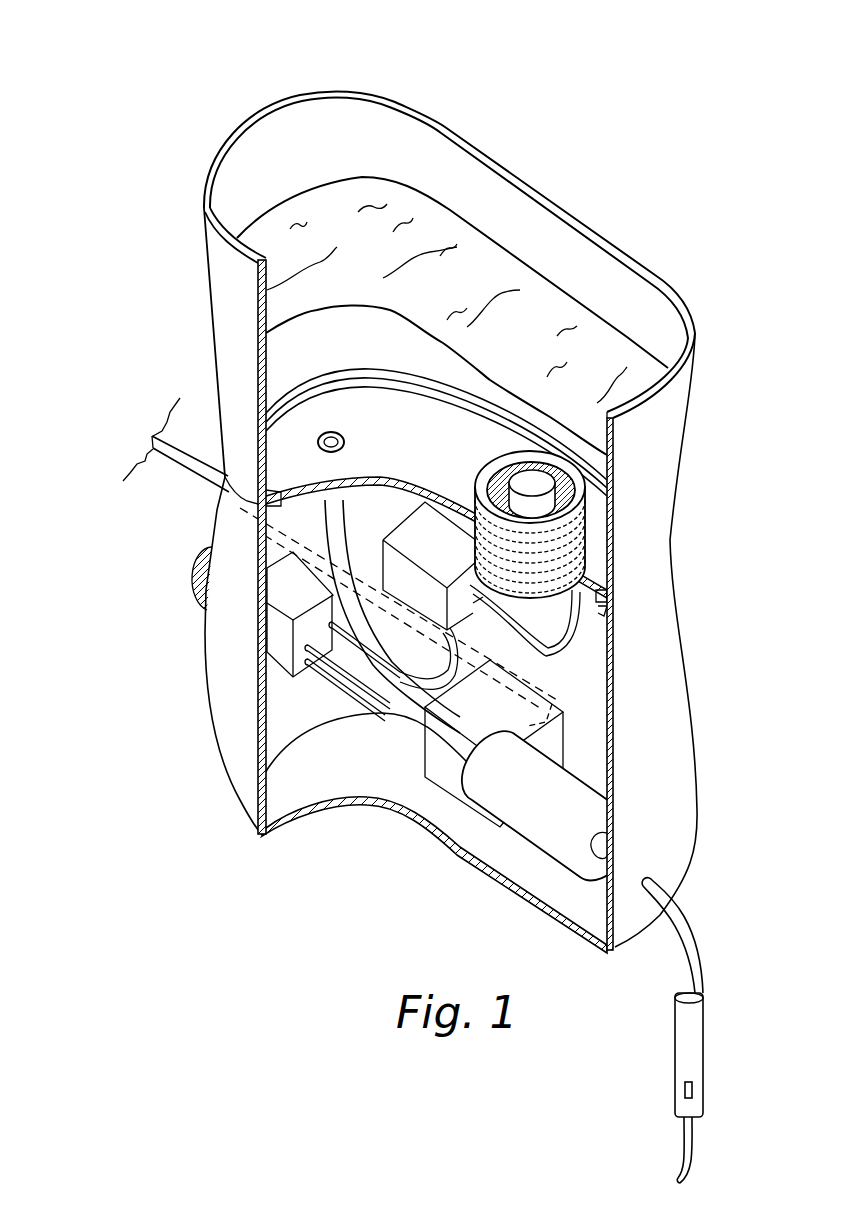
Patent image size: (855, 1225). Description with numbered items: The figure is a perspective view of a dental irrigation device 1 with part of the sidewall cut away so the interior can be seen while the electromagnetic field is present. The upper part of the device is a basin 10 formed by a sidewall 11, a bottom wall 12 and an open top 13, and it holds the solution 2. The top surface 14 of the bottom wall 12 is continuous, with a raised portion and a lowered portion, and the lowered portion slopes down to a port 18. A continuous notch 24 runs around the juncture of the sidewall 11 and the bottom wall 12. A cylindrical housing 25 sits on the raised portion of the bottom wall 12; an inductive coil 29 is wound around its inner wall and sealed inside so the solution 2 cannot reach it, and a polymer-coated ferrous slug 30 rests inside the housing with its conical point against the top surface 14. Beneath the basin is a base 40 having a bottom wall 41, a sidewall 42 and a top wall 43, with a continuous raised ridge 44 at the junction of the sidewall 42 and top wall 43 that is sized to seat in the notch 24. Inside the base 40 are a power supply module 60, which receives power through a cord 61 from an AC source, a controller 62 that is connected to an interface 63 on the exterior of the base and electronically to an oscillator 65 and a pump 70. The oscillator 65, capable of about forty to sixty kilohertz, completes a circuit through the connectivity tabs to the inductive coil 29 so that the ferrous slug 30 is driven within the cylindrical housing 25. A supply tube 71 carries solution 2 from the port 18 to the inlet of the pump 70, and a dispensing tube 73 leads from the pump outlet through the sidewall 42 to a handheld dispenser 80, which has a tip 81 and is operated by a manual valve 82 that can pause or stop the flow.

The dental irrigation device 1 is at (409, 598).
The solution 2 is at (401, 217).
The basin 10 is at (660, 280).
The sidewall 11 is at (692, 360).
The bottom wall 12 is at (378, 398).
The open top 13 is at (467, 306).
The top surface 14 is at (424, 450).
The port 18 is at (327, 437).
The continuous notch 24 is at (607, 600).
The cylindrical housing 25 is at (585, 488).
The inductive coil 29 is at (585, 540).
The ferrous slug 30 is at (530, 456).
The base 40 is at (690, 702).
The bottom wall 41 is at (359, 767).
The sidewall 42 is at (687, 755).
The top wall 43 is at (258, 504).
The continuous raised ridge 44 is at (607, 607).
The power supply module 60 is at (440, 772).
The cord 61 is at (157, 440).
The controller 62 is at (282, 645).
The interface 63 is at (192, 572).
The oscillator 65 is at (470, 592).
The pump 70 is at (545, 843).
The supply tube 71 is at (380, 672).
The dispensing tube 73 is at (690, 930).
The handheld dispenser 80 is at (703, 1043).
The tip 81 is at (692, 1158).
The manual valve 82 is at (692, 1090).